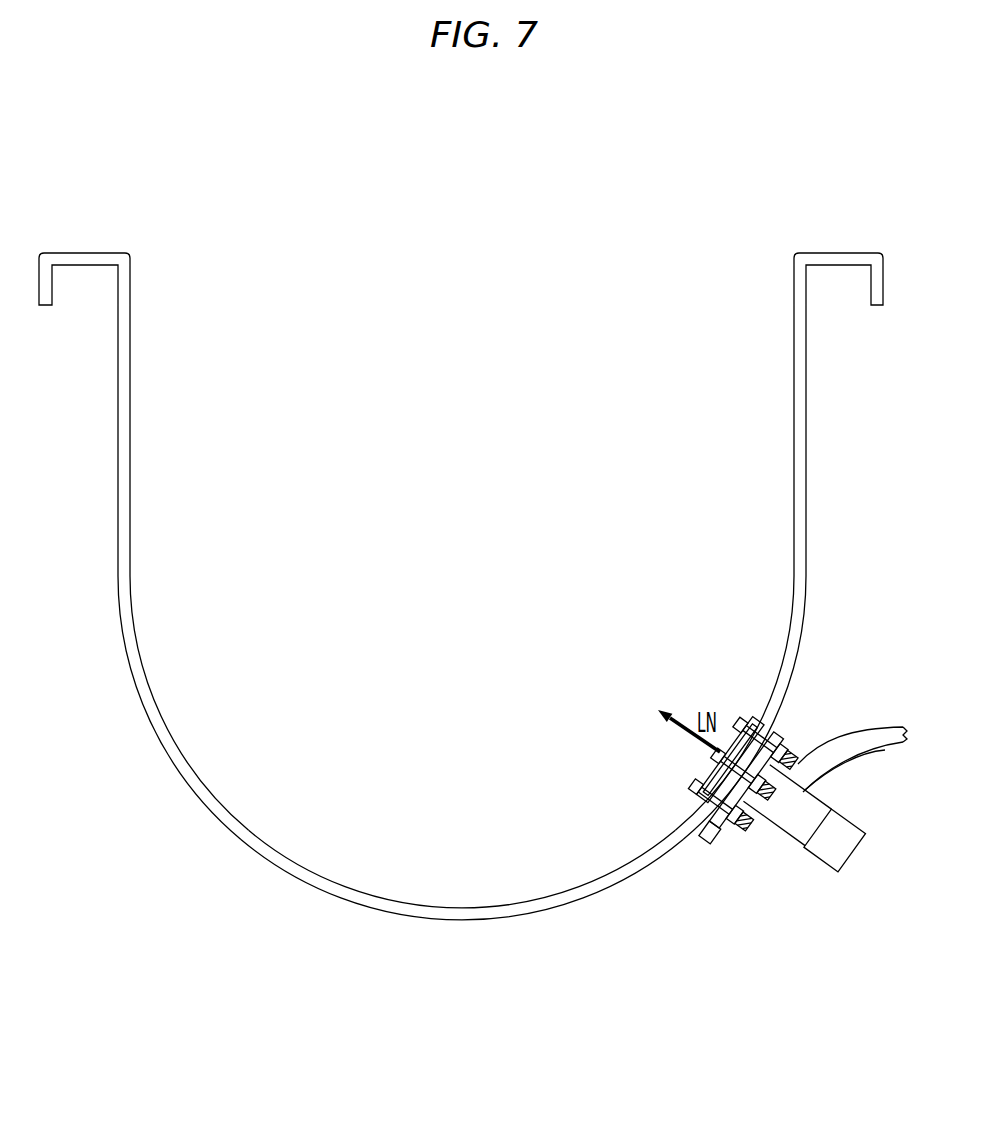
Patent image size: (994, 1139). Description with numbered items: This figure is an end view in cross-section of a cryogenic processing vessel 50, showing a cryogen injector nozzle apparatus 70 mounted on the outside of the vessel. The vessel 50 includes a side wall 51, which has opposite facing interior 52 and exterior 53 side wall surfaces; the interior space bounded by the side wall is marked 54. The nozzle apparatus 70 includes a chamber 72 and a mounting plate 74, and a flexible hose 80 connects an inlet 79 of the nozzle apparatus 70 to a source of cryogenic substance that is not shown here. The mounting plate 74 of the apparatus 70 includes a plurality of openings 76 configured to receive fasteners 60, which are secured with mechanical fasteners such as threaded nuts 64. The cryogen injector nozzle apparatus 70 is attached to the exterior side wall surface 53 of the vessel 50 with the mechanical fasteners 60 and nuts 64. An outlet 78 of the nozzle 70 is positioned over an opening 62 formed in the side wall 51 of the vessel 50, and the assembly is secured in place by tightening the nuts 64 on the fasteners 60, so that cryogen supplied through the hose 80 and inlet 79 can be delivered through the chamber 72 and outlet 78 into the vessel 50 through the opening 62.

The cryogenic processing vessel 50 is at (297, 198).
The side wall 51 is at (800, 435).
The interior side wall surface 52 is at (783, 638).
The exterior side wall surface 53 is at (583, 900).
The interior of trough 54 is at (467, 519).
The fasteners 60 is at (790, 755).
The opening 62 is at (735, 768).
The threaded nuts 64 is at (785, 745).
The cryogen injector nozzle apparatus 70 is at (843, 843).
The chamber 72 is at (785, 830).
The mounting plate 74 is at (700, 830).
The openings 76 is at (725, 805).
The outlet 78 is at (735, 760).
The inlet 79 is at (840, 767).
The flexible hose 80 is at (895, 725).